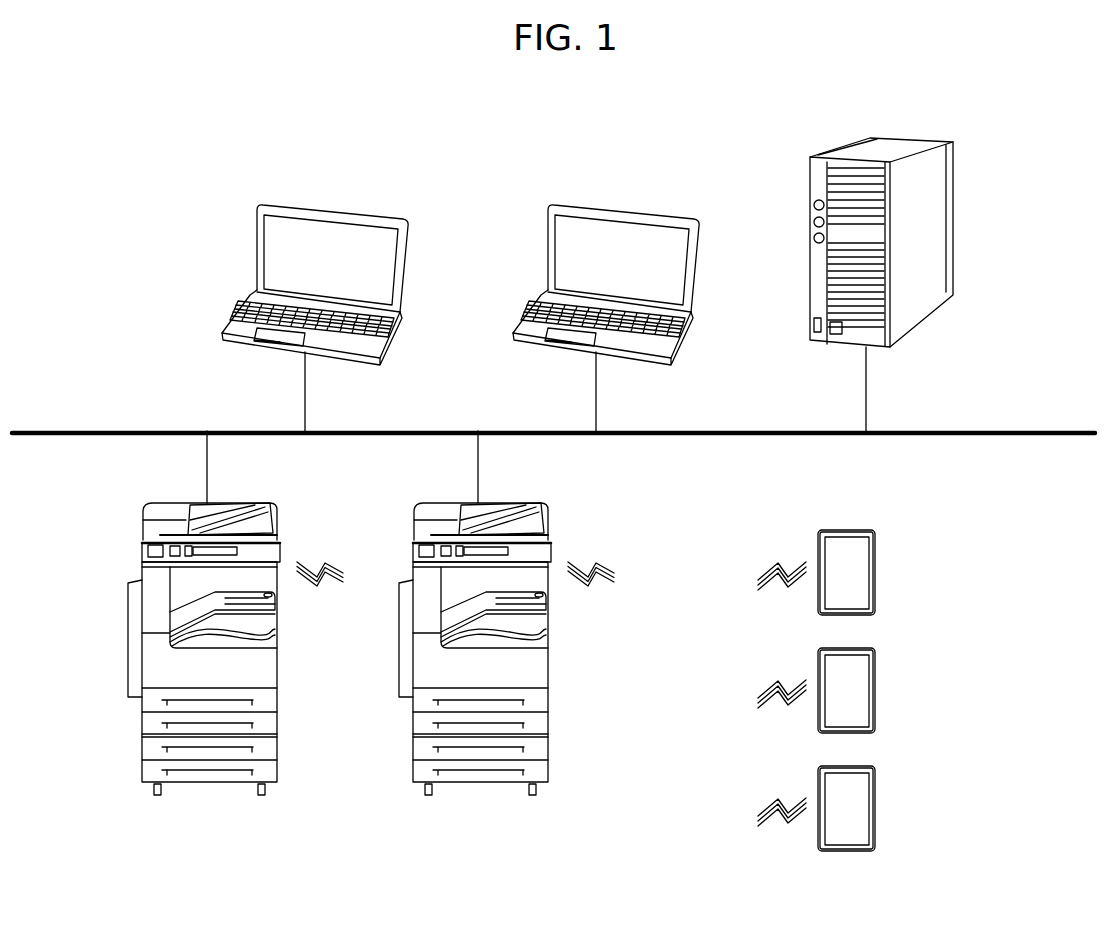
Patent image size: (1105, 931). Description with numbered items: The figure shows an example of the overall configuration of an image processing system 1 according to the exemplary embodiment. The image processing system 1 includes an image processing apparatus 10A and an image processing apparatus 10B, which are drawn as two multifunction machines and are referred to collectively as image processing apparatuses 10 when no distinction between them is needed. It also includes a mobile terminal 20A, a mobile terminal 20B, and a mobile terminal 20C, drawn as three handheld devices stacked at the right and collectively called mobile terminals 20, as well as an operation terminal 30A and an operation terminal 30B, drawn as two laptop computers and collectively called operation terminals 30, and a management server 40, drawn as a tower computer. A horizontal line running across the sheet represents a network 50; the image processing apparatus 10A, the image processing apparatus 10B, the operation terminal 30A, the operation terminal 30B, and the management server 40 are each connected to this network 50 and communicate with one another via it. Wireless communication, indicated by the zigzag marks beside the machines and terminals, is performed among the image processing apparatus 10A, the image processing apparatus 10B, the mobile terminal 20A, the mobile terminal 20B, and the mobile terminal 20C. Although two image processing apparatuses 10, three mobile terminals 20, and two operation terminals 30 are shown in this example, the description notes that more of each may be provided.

The image processing system 1 is at (119, 204).
The image processing apparatuses 10 is at (478, 856).
The image processing apparatus 10A is at (242, 786).
The image processing apparatus 10B is at (506, 643).
The mobile terminals 20 is at (990, 556).
The mobile terminal 20A is at (878, 570).
The mobile terminal 20B is at (861, 690).
The mobile terminal 20C is at (861, 808).
The operation terminals 30 is at (610, 135).
The operation terminal 30A is at (365, 212).
The operation terminal 30B is at (606, 284).
The management server 40 is at (953, 207).
The network 50 is at (1030, 430).